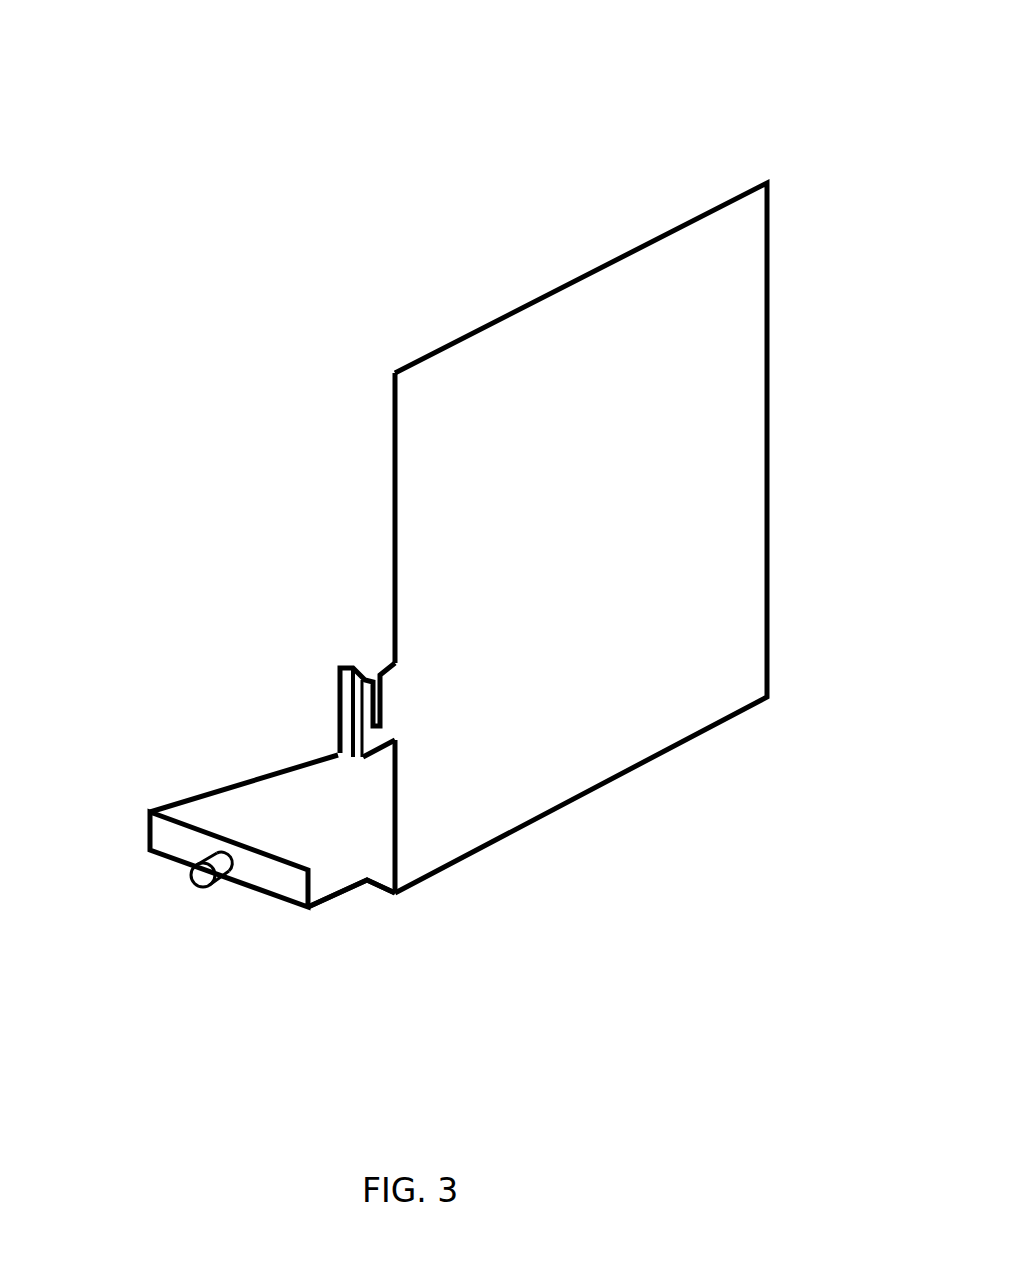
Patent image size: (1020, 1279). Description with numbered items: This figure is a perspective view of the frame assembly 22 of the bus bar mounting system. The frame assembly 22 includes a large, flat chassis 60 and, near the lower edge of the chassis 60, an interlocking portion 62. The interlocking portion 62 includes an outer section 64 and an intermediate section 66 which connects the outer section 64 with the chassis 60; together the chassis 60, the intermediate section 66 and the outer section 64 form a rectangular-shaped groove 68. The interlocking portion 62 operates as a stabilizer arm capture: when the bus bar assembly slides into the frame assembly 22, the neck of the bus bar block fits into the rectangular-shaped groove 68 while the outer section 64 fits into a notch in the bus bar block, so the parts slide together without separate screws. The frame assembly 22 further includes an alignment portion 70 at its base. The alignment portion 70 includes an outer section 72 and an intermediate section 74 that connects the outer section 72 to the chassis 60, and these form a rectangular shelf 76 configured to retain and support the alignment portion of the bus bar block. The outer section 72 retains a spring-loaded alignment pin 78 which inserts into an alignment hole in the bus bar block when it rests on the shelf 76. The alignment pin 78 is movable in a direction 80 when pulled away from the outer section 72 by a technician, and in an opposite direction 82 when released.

The frame assembly 22 is at (750, 87).
The chassis 60 is at (760, 545).
The interlocking portion 62 is at (292, 609).
The outer section 64 is at (335, 708).
The intermediate section 66 is at (380, 750).
The rectangular-shaped groove 68 is at (366, 638).
The alignment portion 70 is at (254, 900).
The outer section 72 is at (150, 850).
The intermediate section 74 is at (333, 883).
The rectangular shelf 76 is at (358, 855).
The spring-loaded alignment pin 78 is at (208, 890).
The direction 80 is at (162, 910).
The direction 82 is at (331, 800).